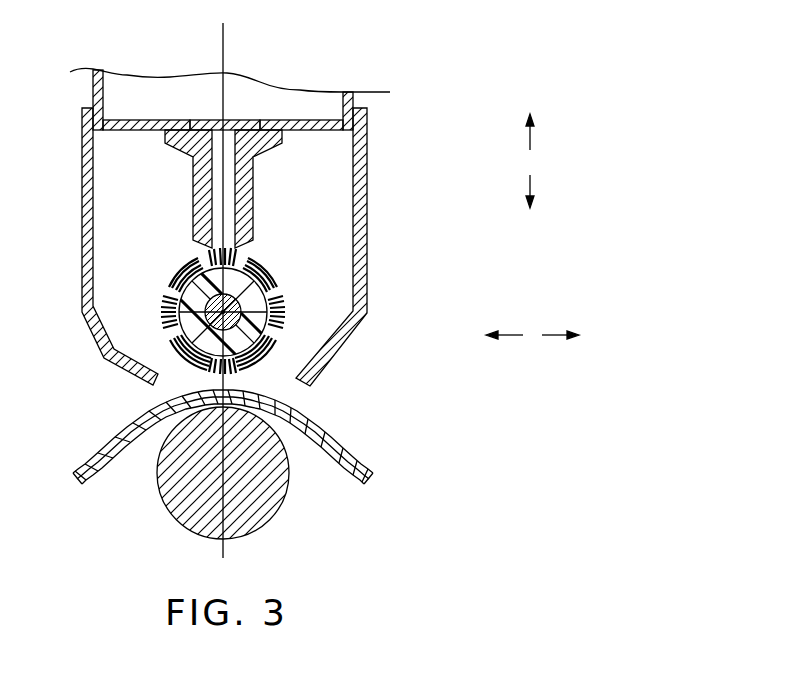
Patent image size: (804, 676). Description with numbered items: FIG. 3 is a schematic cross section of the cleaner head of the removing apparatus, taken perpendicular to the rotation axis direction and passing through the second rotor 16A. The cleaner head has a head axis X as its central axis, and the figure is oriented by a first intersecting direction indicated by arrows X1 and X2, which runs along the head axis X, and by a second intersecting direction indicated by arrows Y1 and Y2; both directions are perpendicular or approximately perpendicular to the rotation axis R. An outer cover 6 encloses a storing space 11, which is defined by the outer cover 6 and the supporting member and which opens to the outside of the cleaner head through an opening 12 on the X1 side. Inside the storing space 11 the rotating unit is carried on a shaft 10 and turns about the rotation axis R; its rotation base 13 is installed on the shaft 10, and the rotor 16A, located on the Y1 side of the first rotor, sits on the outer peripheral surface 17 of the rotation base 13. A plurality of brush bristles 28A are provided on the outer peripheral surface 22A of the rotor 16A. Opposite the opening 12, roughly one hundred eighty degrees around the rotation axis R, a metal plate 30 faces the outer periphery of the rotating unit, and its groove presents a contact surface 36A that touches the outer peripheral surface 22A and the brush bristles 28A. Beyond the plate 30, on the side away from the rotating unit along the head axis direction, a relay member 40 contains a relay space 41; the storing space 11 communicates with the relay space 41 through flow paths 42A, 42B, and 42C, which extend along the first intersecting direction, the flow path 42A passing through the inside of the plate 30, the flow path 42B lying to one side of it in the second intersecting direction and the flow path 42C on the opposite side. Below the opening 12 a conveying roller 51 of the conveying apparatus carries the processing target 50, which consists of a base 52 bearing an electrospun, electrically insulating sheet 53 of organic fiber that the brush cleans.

The outer cover 6 is at (80, 205).
The shaft 10 is at (163, 297).
The storing space 11 is at (96, 241).
The opening 12 is at (163, 390).
The rotation base 13 is at (163, 333).
The rotor (second rotor) 16A is at (275, 280).
The outer peripheral surface of the rotation base 17 is at (285, 345).
The outer peripheral surface of the rotor 16A 22A is at (170, 278).
The brush bristles (second brush bristles) 28A is at (258, 367).
The plate 30 is at (192, 152).
The contact surface (first contact surface) 36A is at (250, 252).
The relay member 40 is at (362, 97).
The relay space 41 is at (297, 100).
The flow path 42A is at (227, 147).
The flow path 42B is at (315, 131).
The flow path 42C is at (135, 127).
The processing target 50 is at (370, 442).
The conveying roller 51 is at (285, 497).
The base 52 is at (115, 462).
The sheet 53 is at (158, 410).
The rotation axis R is at (285, 302).
The head axis X is at (223, 48).
The arrow X1 is at (546, 191).
The arrow X2 is at (546, 134).
The arrow Y1 is at (560, 349).
The arrow Y2 is at (504, 349).